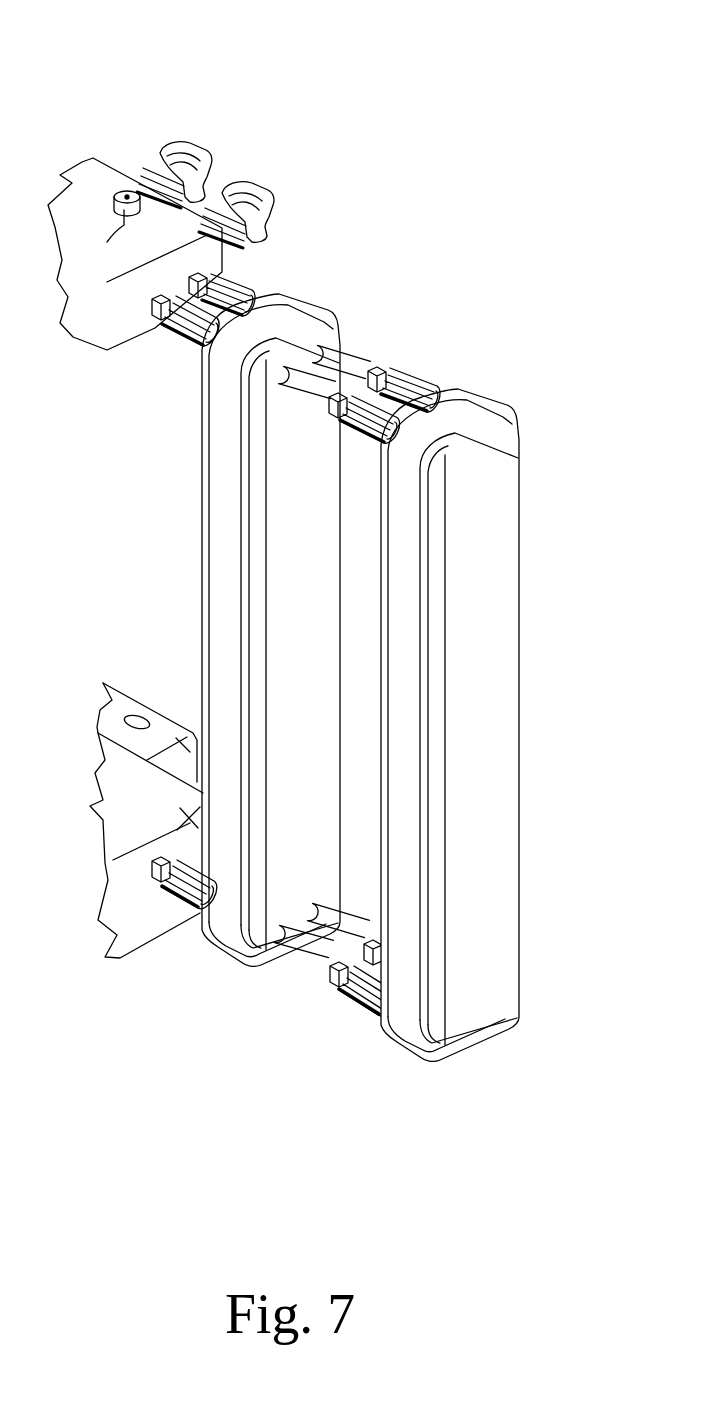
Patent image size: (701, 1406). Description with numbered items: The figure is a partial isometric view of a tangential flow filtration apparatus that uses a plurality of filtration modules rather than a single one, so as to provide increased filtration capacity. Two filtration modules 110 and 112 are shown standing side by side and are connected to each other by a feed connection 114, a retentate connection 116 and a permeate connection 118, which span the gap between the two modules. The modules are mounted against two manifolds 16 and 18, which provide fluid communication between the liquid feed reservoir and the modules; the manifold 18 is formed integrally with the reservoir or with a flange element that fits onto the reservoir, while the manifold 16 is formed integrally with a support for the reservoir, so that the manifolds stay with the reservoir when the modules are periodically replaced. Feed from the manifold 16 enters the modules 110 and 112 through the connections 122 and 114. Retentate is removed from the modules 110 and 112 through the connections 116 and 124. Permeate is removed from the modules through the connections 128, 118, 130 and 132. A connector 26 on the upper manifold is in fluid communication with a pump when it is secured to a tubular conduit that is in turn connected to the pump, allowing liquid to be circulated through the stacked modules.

The manifold 16 is at (135, 927).
The manifold 18 is at (157, 227).
The connector 26 is at (184, 148).
The filtration module 110 is at (297, 307).
The filtration module 112 is at (468, 410).
The feed connection 114 is at (313, 953).
The retentate connection 116 is at (307, 393).
The permeate connection 118 is at (403, 378).
The connection 122 is at (195, 913).
The connection 124 is at (173, 345).
The connection 128 is at (197, 860).
The connection 130 is at (255, 262).
The connection 132 is at (255, 195).